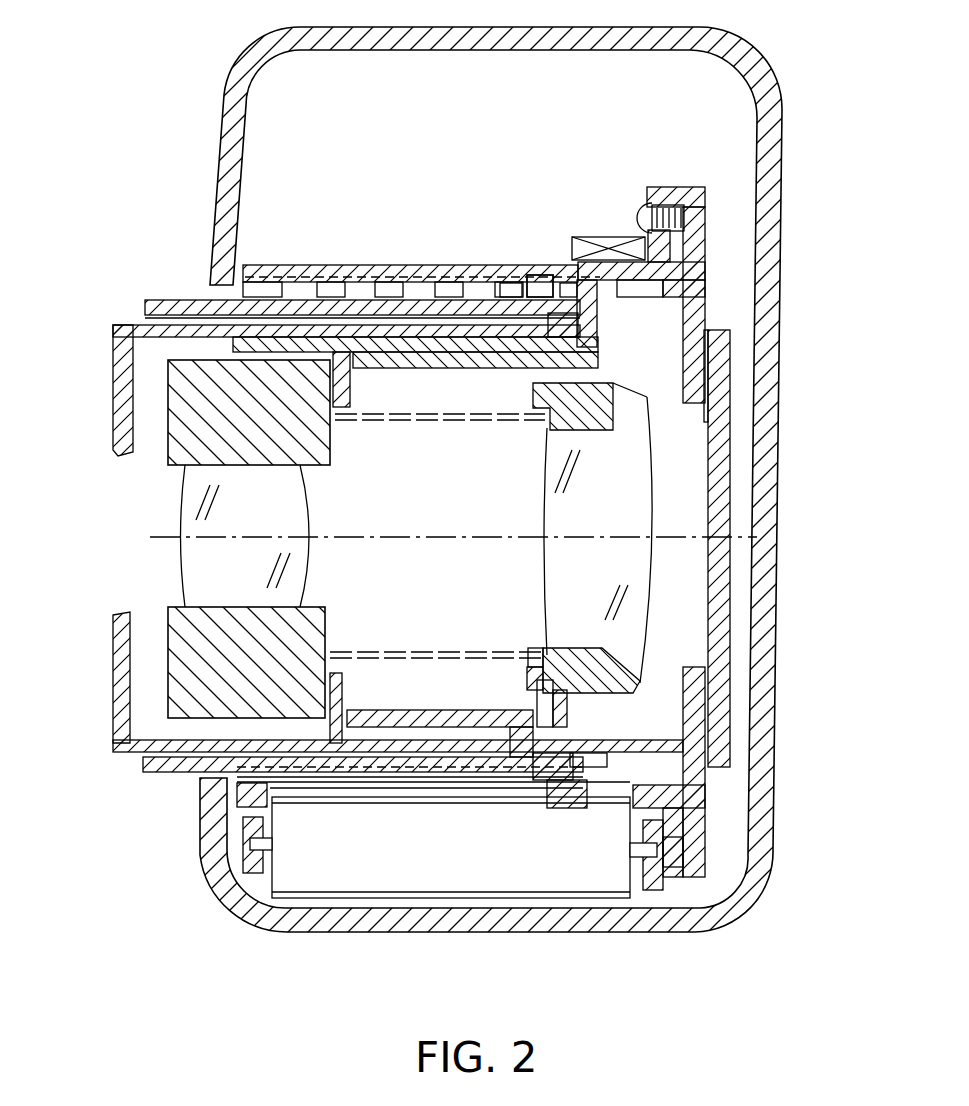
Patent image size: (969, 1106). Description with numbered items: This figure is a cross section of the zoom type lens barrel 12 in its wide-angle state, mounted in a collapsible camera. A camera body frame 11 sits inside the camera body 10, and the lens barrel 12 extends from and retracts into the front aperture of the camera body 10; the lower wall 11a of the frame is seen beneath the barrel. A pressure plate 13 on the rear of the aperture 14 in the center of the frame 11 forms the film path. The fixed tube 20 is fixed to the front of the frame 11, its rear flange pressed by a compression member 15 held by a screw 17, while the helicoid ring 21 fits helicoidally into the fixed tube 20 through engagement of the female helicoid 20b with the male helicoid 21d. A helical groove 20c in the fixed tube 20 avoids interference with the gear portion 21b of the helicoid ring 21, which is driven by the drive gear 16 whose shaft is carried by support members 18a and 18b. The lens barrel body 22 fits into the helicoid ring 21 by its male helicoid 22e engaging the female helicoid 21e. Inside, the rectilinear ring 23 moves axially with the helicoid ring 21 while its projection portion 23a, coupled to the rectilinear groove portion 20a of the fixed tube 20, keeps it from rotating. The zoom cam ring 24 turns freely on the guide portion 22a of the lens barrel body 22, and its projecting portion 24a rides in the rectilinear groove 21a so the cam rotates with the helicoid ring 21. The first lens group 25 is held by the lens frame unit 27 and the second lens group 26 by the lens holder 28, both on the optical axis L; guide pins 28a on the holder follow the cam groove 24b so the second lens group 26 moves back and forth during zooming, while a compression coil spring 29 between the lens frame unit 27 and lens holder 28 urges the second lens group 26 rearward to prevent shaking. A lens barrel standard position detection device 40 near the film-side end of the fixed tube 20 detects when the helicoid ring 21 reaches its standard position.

The camera body 10 is at (773, 200).
The camera body frame 11 is at (707, 242).
The bottom wall of inner frame 11a is at (707, 803).
The zoom type lens barrel 12 is at (255, 225).
The pressure plate 13 is at (722, 467).
The aperture 14 is at (707, 420).
The compression member 15 is at (666, 200).
The drive gear 16 is at (317, 847).
The screw 17 is at (685, 187).
The support member 18a is at (257, 905).
The support member 18b is at (652, 905).
The fixed tube 20 is at (243, 270).
The rectilinear groove portion 20a is at (452, 288).
The female helicoid 20b is at (383, 290).
The helical groove 20c is at (330, 290).
The helicoid ring 21 is at (145, 307).
The rectilinear groove 21a is at (413, 790).
The gear portion 21b is at (536, 290).
The male helicoid 21d is at (530, 300).
The female helicoid 21e is at (411, 300).
The lens barrel body 22 is at (113, 373).
The guide portion 22a is at (348, 390).
The male helicoid 22e is at (510, 300).
The rectilinear ring 23 is at (587, 342).
The projection portion 23a is at (578, 290).
The zoom cam ring 24 is at (385, 710).
The projecting portion 24a is at (527, 782).
The cam groove 24b is at (567, 716).
The first lens group 25 is at (220, 583).
The second lens group 26 is at (597, 575).
The lens frame unit 27 is at (270, 431).
The lens holder 28 is at (602, 662).
The guide pins 28a is at (530, 655).
The compression coil spring 29 is at (434, 425).
The lens barrel standard position detection device 40 is at (605, 233).
The optical axis L is at (155, 537).